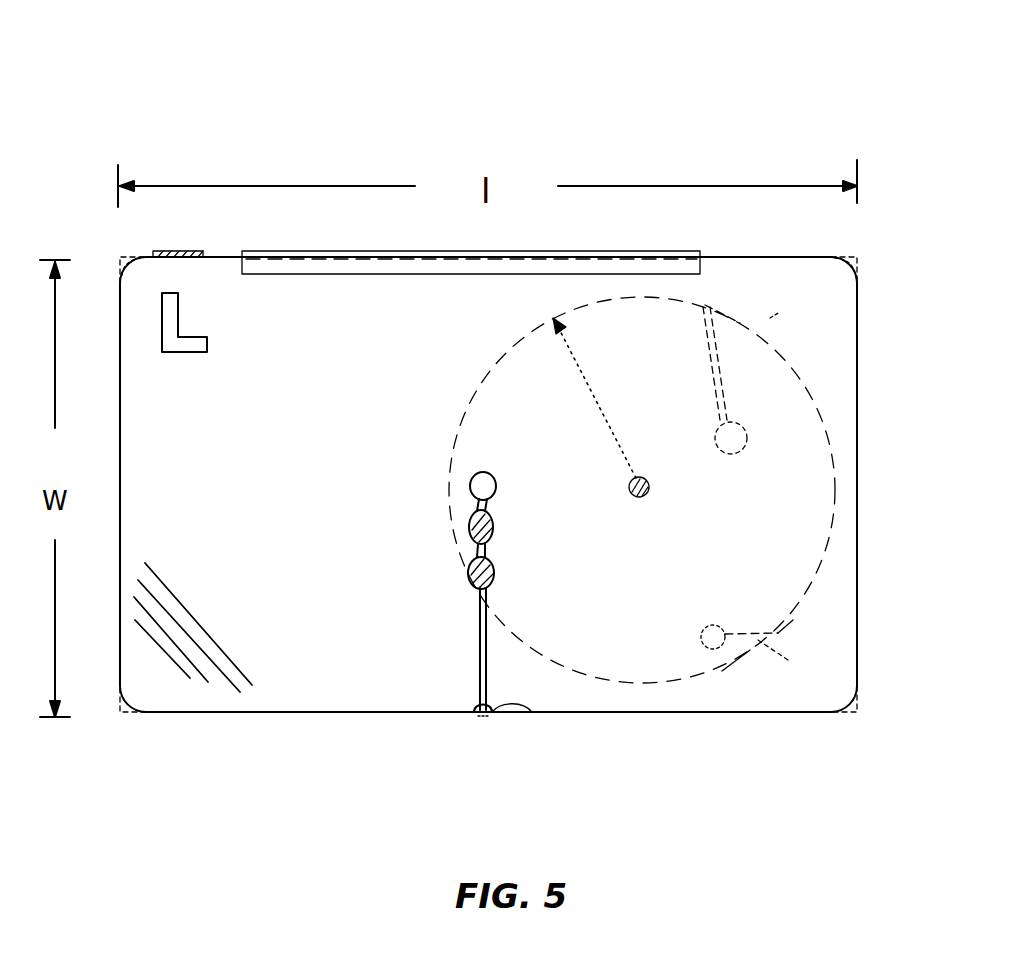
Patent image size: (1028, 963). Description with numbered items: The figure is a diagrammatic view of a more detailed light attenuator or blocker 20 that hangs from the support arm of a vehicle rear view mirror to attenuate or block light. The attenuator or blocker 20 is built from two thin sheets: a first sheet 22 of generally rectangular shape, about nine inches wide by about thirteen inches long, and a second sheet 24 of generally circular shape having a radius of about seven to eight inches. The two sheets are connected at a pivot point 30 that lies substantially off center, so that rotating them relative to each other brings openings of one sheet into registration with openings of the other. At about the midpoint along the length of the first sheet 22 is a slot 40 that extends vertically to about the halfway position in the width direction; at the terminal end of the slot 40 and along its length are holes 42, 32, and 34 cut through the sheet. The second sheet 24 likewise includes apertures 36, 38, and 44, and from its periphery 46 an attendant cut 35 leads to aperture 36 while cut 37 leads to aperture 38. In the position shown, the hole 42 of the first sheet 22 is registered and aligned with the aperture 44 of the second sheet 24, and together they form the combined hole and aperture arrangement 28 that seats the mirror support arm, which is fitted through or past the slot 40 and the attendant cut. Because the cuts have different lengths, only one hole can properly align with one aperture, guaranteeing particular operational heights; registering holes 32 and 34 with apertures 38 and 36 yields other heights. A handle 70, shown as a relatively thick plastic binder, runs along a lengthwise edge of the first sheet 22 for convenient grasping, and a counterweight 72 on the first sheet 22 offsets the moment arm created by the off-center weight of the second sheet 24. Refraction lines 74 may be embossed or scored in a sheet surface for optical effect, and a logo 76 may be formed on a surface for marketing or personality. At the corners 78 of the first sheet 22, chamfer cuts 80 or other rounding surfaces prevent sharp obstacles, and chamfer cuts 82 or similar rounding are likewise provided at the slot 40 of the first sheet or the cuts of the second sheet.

The attenuator or blocker 20 is at (565, 397).
The first sheet 22 is at (783, 712).
The second sheet 24 is at (834, 532).
The combined hole and aperture arrangement 28 is at (460, 560).
The pivot point 30 is at (645, 497).
The hole 32 is at (494, 526).
The hole 34 is at (495, 570).
The cut 35 is at (788, 658).
The aperture 36 is at (728, 620).
The cut 37 is at (704, 326).
The aperture 38 is at (748, 438).
The slot 40 is at (478, 677).
The hole 42 is at (497, 478).
The aperture 44 is at (481, 470).
The periphery 46 is at (755, 333).
The handle 70 is at (680, 250).
The counterweight 72 is at (183, 250).
The refraction lines 74 is at (246, 672).
The logo 76 is at (195, 352).
The corners 78 is at (858, 258).
The chamfer cuts 80 is at (838, 258).
The chamfer cuts 82 is at (478, 714).